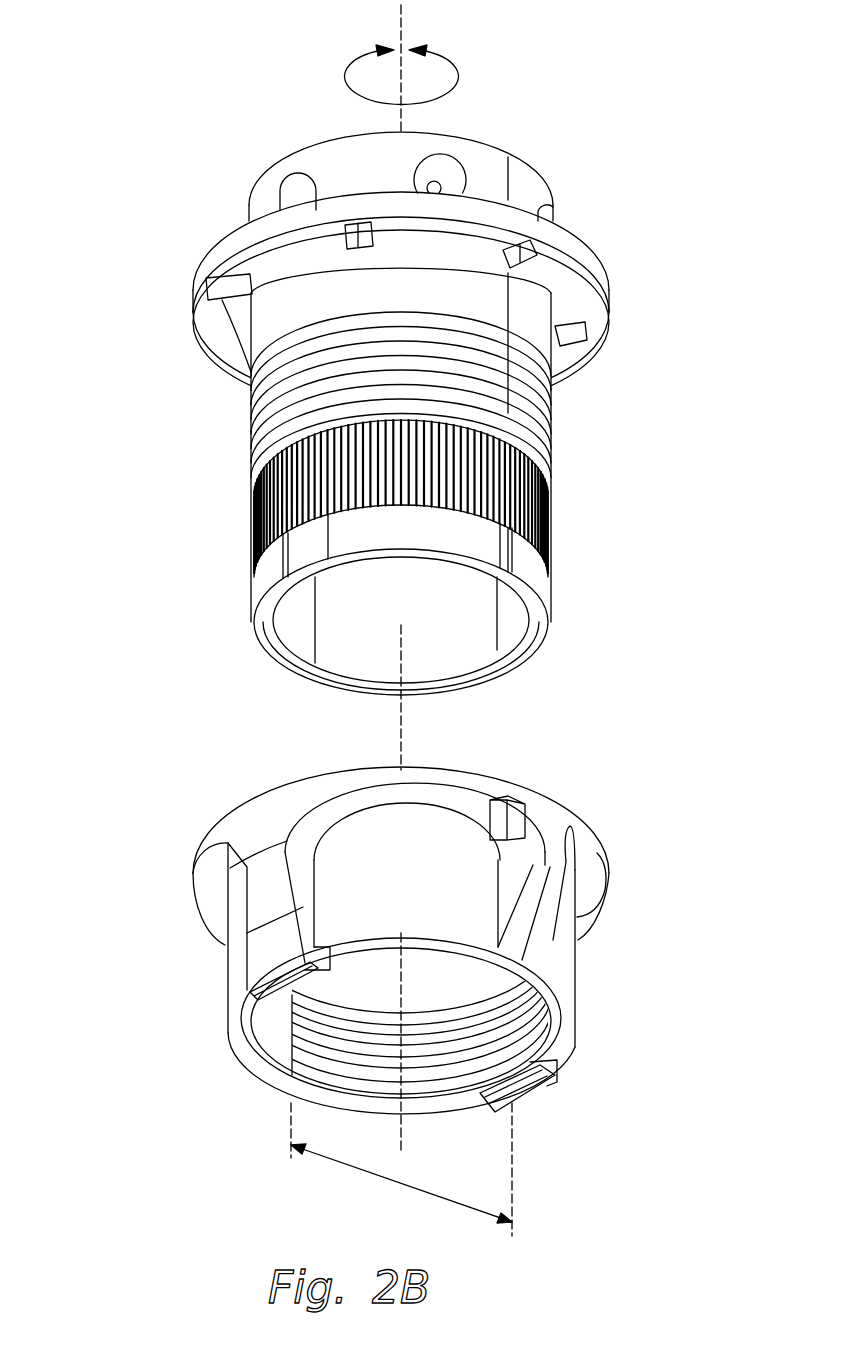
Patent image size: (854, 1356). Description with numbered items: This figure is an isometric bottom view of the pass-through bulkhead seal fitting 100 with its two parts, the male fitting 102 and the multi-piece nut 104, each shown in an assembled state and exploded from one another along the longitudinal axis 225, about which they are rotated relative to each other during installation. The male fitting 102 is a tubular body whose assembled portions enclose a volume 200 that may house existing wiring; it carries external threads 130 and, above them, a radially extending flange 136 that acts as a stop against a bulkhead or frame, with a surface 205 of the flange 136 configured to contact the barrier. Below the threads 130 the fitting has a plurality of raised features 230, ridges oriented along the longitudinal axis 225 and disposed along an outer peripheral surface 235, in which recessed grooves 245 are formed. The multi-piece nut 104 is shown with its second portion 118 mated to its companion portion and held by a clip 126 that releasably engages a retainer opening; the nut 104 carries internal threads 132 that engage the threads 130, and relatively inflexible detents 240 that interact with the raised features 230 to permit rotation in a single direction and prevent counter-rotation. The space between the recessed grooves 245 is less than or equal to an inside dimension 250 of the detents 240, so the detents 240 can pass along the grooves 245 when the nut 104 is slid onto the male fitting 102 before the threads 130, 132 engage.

The pass-through bulkhead seal fitting 100 is at (172, 91).
The male fitting 102 is at (416, 416).
The multi-piece nut 104 is at (374, 965).
The second portion 118 is at (576, 988).
The clip 126 is at (492, 823).
The threads 130 is at (283, 423).
The threads 132 is at (443, 1063).
The radially extending flange 136 is at (565, 240).
The volume 200 is at (481, 611).
The surface 205 is at (578, 376).
The longitudinal axis 225 is at (403, 30).
The raised features 230 is at (258, 516).
The outer peripheral surface 235 is at (512, 556).
The detents 240 is at (292, 988).
The recessed groove 245 is at (296, 560).
The inside dimension 250 is at (367, 1170).